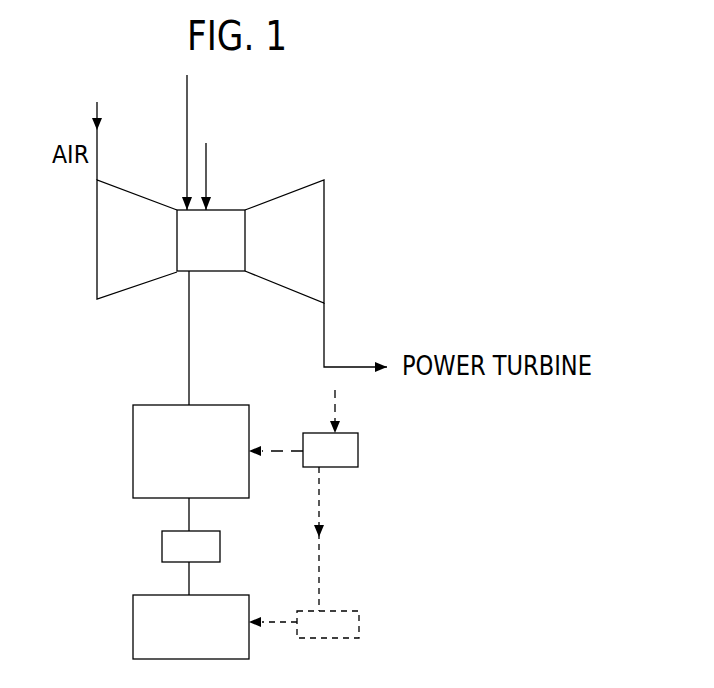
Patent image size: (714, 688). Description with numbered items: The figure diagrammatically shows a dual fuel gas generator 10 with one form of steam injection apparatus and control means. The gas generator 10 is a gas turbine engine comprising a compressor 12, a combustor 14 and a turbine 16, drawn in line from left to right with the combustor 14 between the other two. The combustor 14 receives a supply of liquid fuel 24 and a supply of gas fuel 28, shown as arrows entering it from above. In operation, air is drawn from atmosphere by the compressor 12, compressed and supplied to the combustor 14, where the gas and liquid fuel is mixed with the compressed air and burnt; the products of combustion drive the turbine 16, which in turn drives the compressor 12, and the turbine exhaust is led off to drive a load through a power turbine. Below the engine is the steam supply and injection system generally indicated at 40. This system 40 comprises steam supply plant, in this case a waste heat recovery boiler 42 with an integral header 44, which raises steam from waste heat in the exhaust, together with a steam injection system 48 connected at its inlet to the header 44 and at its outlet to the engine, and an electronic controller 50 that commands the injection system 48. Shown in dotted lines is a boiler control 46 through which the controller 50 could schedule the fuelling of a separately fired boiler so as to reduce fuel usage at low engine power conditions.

The gas generator 10 is at (308, 153).
The compressor 12 is at (111, 248).
The combustor 14 is at (208, 255).
The turbine 16 is at (307, 222).
The liquid fuel 24 is at (207, 168).
The gas fuel 28 is at (188, 98).
The steam supply and injection system 40 is at (112, 513).
The waste heat recovery boiler 42 is at (206, 642).
The header 44 is at (200, 548).
The boiler control 46 is at (345, 625).
The steam injection system 48 is at (206, 462).
The electronic controller 50 is at (340, 453).